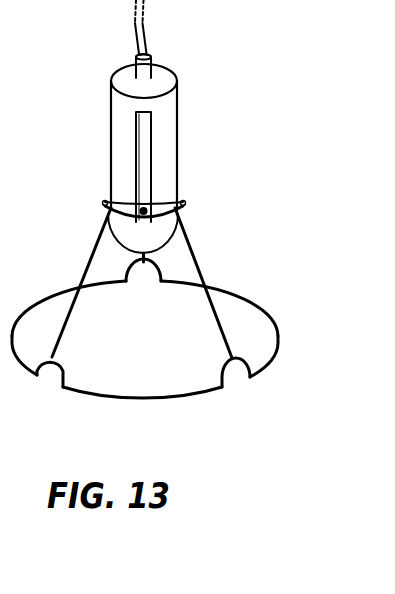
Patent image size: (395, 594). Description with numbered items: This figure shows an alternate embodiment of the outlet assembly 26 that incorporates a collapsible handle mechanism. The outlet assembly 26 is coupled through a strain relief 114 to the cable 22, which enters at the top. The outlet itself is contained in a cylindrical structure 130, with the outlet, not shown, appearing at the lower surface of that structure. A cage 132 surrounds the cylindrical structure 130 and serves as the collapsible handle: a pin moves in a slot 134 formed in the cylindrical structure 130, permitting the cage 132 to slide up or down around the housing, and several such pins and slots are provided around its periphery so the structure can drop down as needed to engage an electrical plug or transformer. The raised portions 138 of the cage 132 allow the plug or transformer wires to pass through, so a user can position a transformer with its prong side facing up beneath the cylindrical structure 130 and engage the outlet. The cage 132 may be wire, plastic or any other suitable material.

The outlet assembly 26 is at (62, 98).
The cable 22 is at (136, 37).
The strain relief 114 is at (152, 62).
The cylindrical structure 130 is at (178, 165).
The slot 134 is at (135, 138).
The cage 132 is at (99, 240).
The raised portions 138 is at (140, 274).